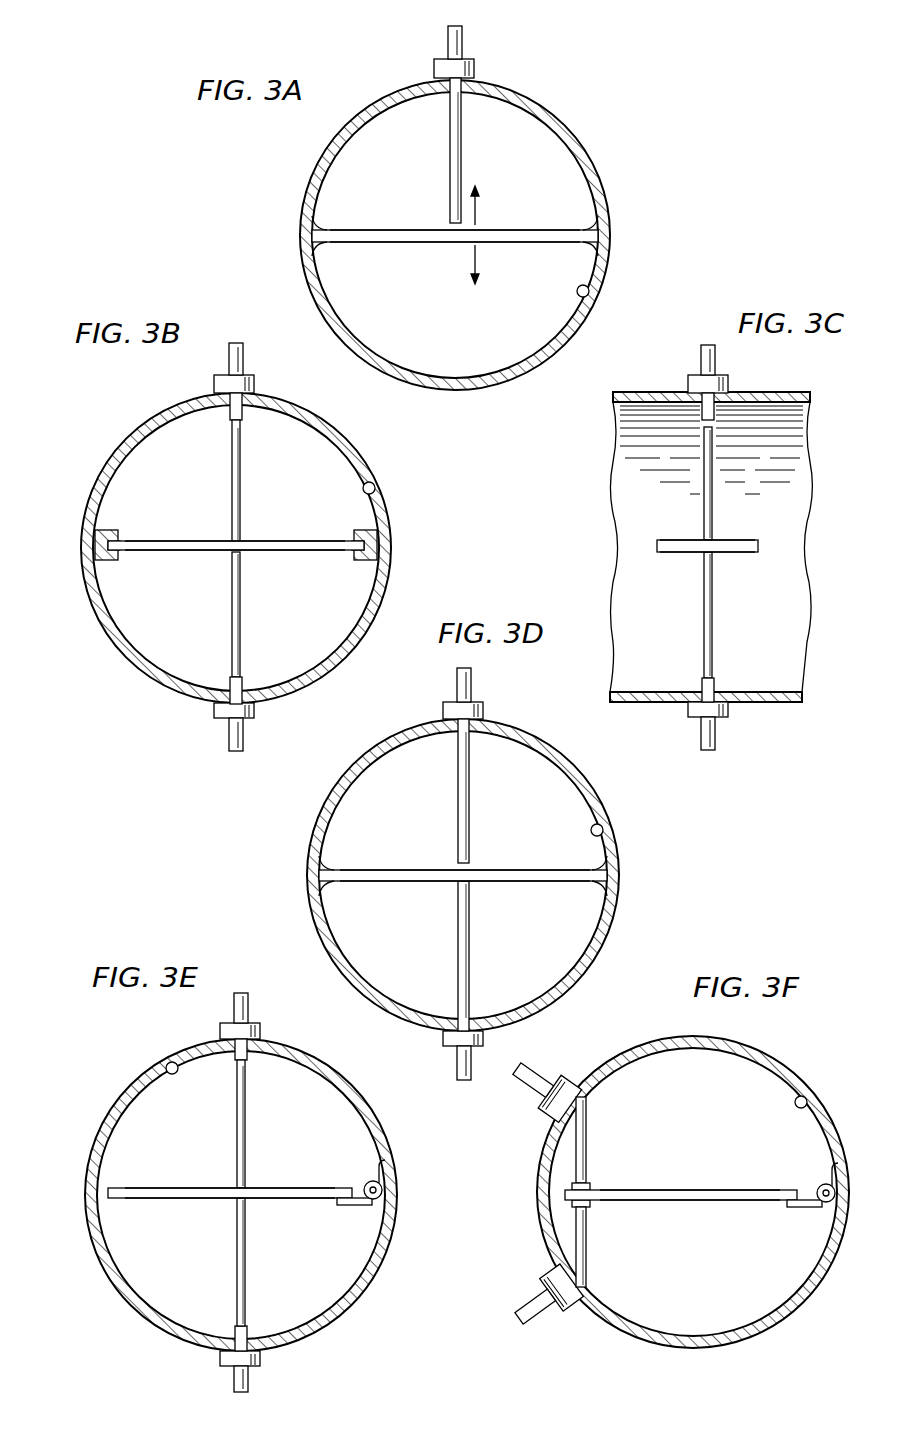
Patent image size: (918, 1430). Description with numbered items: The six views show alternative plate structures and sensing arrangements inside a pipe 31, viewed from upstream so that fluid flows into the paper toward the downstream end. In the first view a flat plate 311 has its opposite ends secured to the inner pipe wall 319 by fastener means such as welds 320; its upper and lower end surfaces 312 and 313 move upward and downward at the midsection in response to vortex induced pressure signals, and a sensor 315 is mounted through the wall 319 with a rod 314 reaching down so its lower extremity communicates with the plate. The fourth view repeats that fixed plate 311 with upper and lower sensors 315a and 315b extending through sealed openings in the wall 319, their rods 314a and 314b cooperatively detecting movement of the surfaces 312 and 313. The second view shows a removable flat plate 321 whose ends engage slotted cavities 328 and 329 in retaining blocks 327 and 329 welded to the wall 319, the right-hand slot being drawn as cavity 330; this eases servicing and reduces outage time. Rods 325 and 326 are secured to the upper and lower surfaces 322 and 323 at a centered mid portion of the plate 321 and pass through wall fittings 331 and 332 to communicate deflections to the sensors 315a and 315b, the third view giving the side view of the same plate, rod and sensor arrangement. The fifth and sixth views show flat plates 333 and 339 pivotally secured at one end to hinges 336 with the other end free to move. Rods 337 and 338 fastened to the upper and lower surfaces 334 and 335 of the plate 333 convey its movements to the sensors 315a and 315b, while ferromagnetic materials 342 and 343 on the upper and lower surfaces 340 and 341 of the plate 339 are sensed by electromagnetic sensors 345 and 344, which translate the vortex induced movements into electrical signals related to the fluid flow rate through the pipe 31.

In FIG. 3A, the pipe 31 is at (541, 112).
In FIG. 3B, the pipe 31 is at (352, 456).
In FIG. 3C, the pipe 31 is at (783, 392).
In FIG. 3D, the pipe 31 is at (580, 792).
In FIG. 3E, the pipe 31 is at (118, 1100).
In FIG. 3F, the pipe 31 is at (780, 1076).
In FIG. 3A, the inner pipe wall 319 is at (589, 287).
In FIG. 3B, the inner pipe wall 319 is at (375, 490).
In FIG. 3D, the inner pipe wall 319 is at (604, 831).
In FIG. 3E, the inner pipe wall 319 is at (166, 1065).
In FIG. 3F, the inner pipe wall 319 is at (807, 1102).
In FIG. 3A, the sensor 315 is at (472, 64).
In FIG. 3B, the upper sensor 315a is at (214, 383).
In FIG. 3C, the upper sensor 315a is at (716, 380).
In FIG. 3D, the upper sensor 315a is at (480, 703).
In FIG. 3E, the upper sensor 315a is at (260, 1030).
In FIG. 3B, the lower sensor 315b is at (228, 737).
In FIG. 3C, the lower sensor 315b is at (716, 737).
In FIG. 3D, the lower sensor 315b is at (461, 1050).
In FIG. 3E, the lower sensor 315b is at (232, 1378).
In FIG. 3A, the flat plate 311 is at (440, 243).
In FIG. 3D, the flat plate 311 is at (461, 854).
In FIG. 3A, the upper end surface 312 is at (380, 228).
In FIG. 3D, the upper end surface 312 is at (375, 869).
In FIG. 3A, the lower end surface 313 is at (398, 244).
In FIG. 3D, the lower end surface 313 is at (380, 882).
In FIG. 3A, the rod 314 is at (447, 222).
In FIG. 3D, the upper rod 314a is at (474, 863).
In FIG. 3D, the lower rod 314b is at (472, 884).
In FIG. 3A, the welds 320 is at (316, 228).
In FIG. 3D, the welds 320 is at (604, 870).
In FIG. 3B, the flat plate 321 is at (147, 551).
In FIG. 3C, the flat plate 321 is at (657, 546).
In FIG. 3B, the upper surface 322 is at (205, 540).
In FIG. 3C, the upper surface 322 is at (660, 542).
In FIG. 3B, the lower surface 323 is at (205, 551).
In FIG. 3C, the lower surface 323 is at (675, 553).
In FIG. 3B, the rod 325 is at (241, 486).
In FIG. 3C, the rod 325 is at (713, 522).
In FIG. 3B, the rod 326 is at (242, 628).
In FIG. 3C, the rod 326 is at (713, 622).
In FIG. 3B, the retaining block 327 is at (115, 530).
In FIG. 3B, the slotted cavity 328 is at (119, 546).
In FIG. 3B, the retaining block 329 is at (356, 534).
In FIG. 3B, the right slot 330 is at (353, 550).
In FIG. 3B, the upper bushing 331 is at (243, 418).
In FIG. 3C, the upper bushing 331 is at (716, 418).
In FIG. 3B, the lower bushing 332 is at (243, 684).
In FIG. 3C, the lower bushing 332 is at (714, 684).
In FIG. 3E, the flat plate 333 is at (148, 1198).
In FIG. 3E, the upper surface 334 is at (180, 1188).
In FIG. 3E, the lower surface 335 is at (180, 1198).
In FIG. 3E, the hinge 336 is at (358, 1205).
In FIG. 3F, the hinge 336 is at (808, 1207).
In FIG. 3E, the rod 337 is at (248, 1135).
In FIG. 3E, the rod 338 is at (246, 1250).
In FIG. 3F, the flat plate 339 is at (772, 1172).
In FIG. 3F, the upper surface 340 is at (683, 1190).
In FIG. 3F, the lower surface 341 is at (683, 1200).
In FIG. 3F, the ferromagnetic material 342 is at (588, 1186).
In FIG. 3F, the ferromagnetic material 343 is at (590, 1207).
In FIG. 3F, the electromagnetic sensor 344 is at (560, 1284).
In FIG. 3F, the electromagnetic sensor 345 is at (560, 1106).